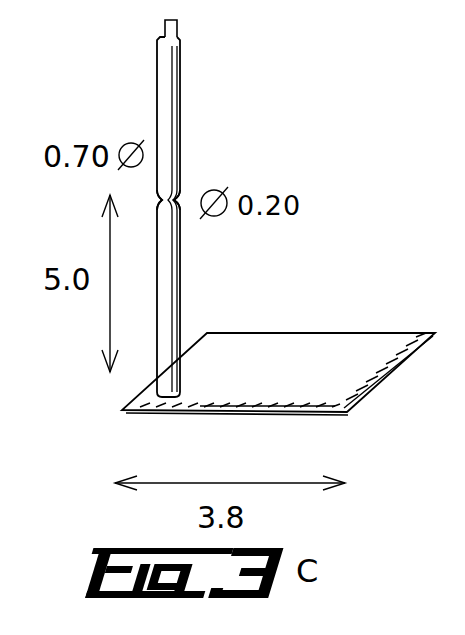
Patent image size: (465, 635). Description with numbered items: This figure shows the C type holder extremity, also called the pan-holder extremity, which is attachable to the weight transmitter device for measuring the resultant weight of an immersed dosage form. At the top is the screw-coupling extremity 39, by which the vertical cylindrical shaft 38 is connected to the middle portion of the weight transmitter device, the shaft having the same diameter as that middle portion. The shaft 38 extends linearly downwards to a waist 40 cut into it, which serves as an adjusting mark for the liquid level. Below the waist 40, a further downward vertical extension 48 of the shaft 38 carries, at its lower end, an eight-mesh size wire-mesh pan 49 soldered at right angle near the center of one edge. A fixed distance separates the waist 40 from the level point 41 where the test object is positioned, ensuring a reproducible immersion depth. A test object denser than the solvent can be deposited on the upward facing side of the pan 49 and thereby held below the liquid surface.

The screw-coupling extremity 39 is at (178, 24).
The vertical cylindrical shaft 38 is at (180, 110).
The waist 40 is at (176, 200).
The downward vertical extension 48 is at (178, 302).
The wire-mesh pan 49 is at (302, 333).
The level point 41 is at (373, 388).